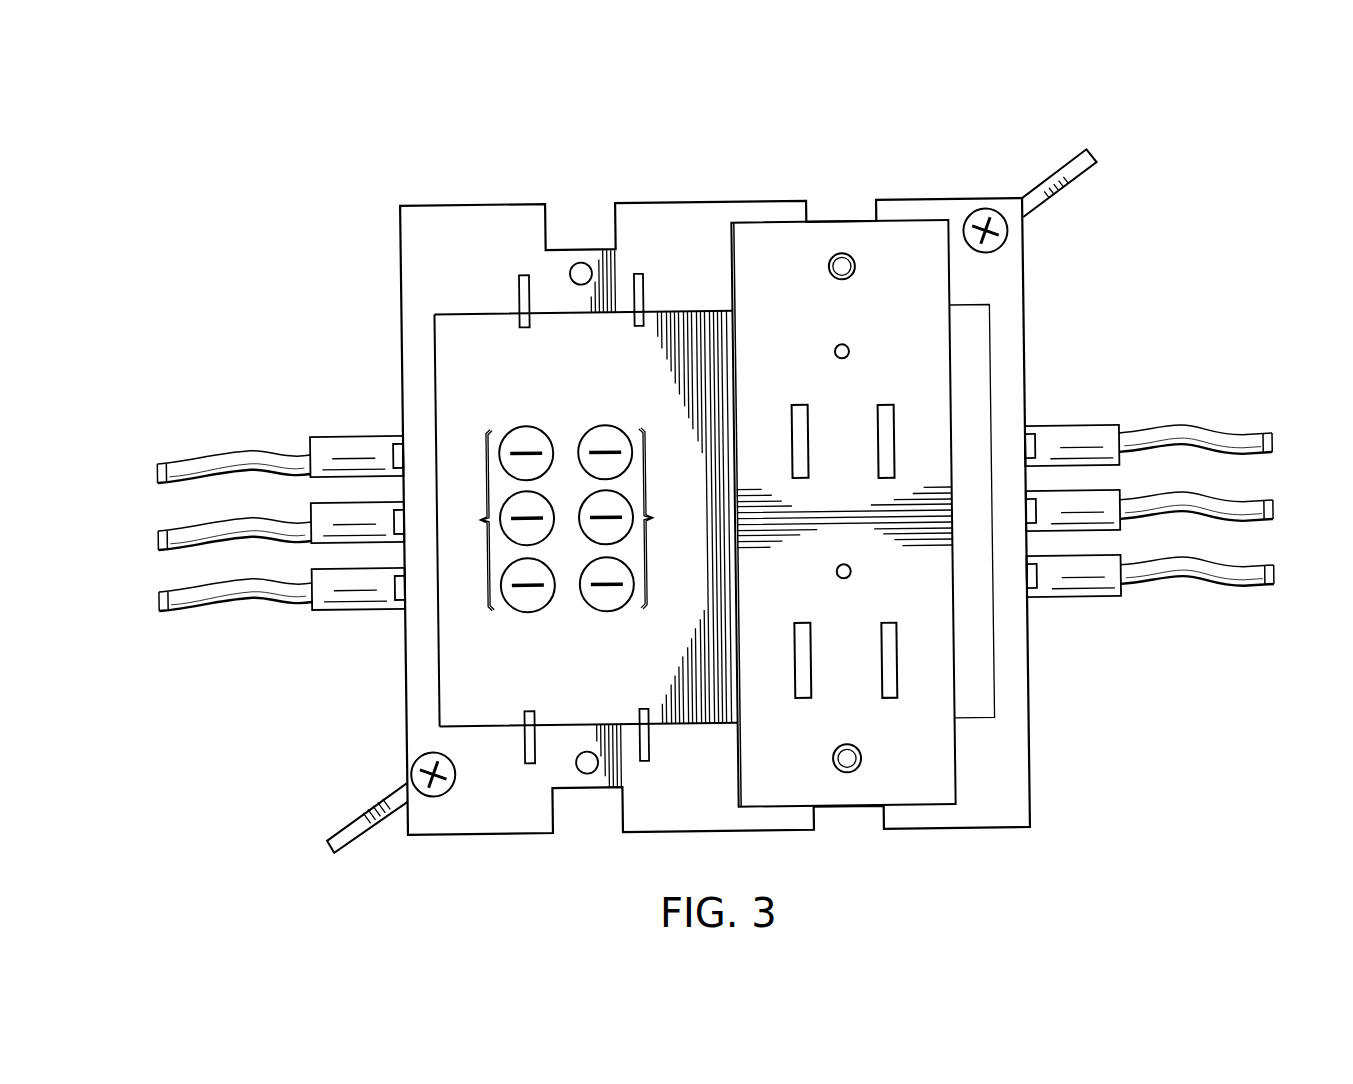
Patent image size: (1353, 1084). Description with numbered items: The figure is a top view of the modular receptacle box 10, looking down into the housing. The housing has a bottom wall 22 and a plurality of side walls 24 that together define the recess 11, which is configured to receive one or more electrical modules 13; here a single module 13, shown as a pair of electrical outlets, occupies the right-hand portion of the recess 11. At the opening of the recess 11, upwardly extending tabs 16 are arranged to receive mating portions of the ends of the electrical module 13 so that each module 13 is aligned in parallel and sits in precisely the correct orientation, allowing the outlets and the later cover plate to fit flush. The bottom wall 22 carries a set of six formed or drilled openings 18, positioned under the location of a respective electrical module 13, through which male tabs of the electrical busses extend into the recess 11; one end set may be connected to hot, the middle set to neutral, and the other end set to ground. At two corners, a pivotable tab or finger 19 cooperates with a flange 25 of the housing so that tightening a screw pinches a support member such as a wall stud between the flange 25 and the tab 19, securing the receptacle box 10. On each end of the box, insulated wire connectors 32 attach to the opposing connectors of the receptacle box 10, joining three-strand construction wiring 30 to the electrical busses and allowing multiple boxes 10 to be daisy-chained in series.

The modular receptacle box 10 is at (266, 129).
The recess 11 is at (570, 682).
The electrical module 13 is at (844, 230).
The upwardly extending tabs 16 is at (520, 302).
The openings 18 is at (565, 518).
The pivotable tab 19 is at (1082, 155).
The bottom wall 22 is at (450, 360).
The side walls 24 is at (440, 673).
The flange 25 is at (951, 198).
The wires 30 is at (171, 448).
The insulated wire connectors 32 is at (356, 440).